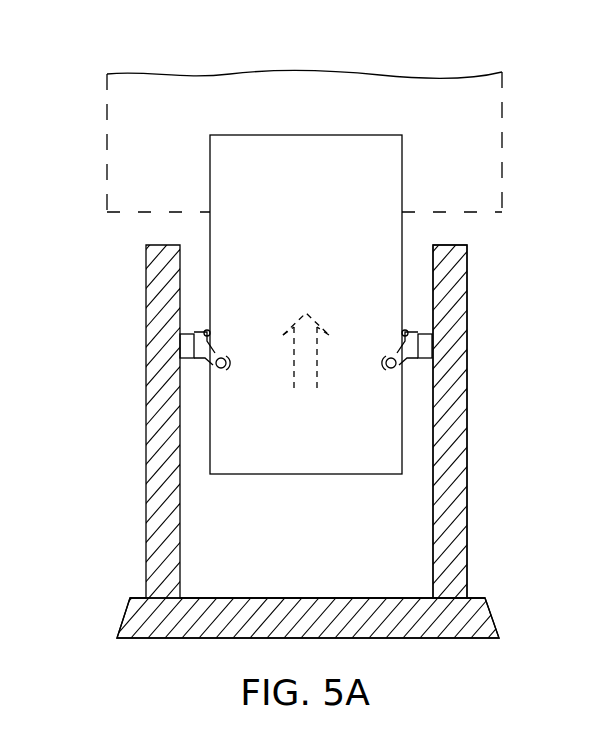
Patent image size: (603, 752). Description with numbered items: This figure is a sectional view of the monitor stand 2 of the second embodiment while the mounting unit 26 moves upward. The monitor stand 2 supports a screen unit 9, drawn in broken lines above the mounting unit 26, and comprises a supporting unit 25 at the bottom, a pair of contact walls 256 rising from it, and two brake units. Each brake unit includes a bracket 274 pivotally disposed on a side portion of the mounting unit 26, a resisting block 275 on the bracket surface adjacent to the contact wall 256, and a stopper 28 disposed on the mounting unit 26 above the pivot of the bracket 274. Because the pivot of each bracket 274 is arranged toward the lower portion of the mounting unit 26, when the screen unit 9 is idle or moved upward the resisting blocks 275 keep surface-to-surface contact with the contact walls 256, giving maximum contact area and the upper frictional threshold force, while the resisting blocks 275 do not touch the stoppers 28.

The screen unit 9 is at (490, 139).
The monitor stand 2 is at (520, 440).
The supporting unit 25 is at (490, 609).
The contact wall 256 is at (455, 497).
The mounting unit 26 is at (415, 283).
The stopper 28 is at (210, 333).
The bracket 274 is at (202, 358).
The resisting block 275 is at (187, 348).